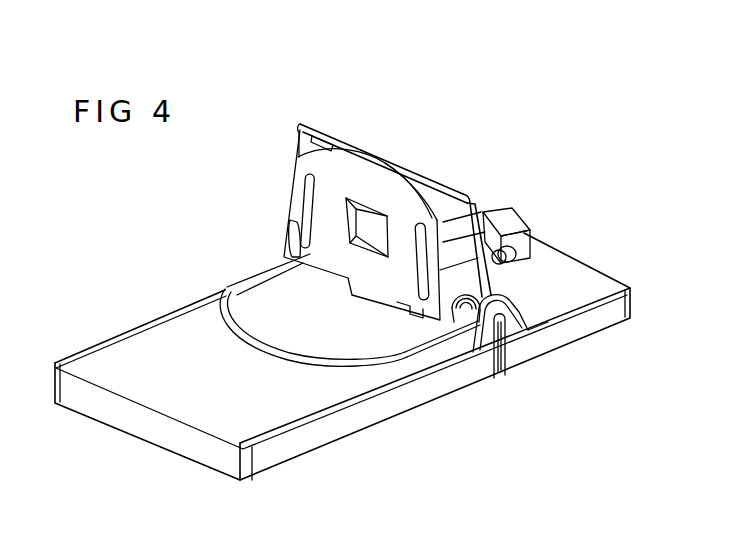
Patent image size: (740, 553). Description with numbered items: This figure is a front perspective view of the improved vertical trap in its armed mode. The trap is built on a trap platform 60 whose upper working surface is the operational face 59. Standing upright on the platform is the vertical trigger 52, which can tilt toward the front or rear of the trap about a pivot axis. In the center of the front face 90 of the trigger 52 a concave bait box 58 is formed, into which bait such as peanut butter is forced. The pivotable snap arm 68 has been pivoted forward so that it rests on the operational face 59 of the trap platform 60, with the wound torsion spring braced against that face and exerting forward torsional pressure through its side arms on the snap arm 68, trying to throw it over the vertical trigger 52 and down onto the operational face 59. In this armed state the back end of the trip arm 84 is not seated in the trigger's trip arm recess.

The vertical trigger 52 is at (302, 158).
The concave bait box 58 is at (359, 210).
The operational face 59 is at (142, 347).
The trap platform 60 is at (108, 413).
The pivotable snap arm 68 is at (350, 365).
The trip arm 84 is at (495, 215).
The front face 90 is at (432, 182).